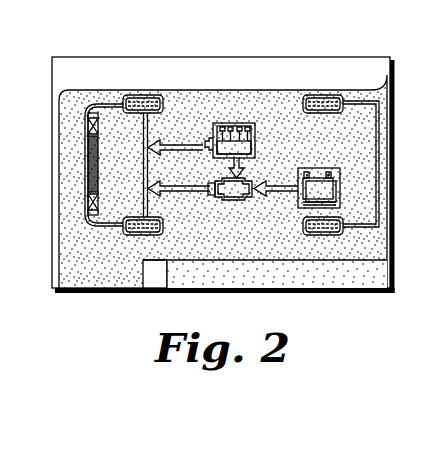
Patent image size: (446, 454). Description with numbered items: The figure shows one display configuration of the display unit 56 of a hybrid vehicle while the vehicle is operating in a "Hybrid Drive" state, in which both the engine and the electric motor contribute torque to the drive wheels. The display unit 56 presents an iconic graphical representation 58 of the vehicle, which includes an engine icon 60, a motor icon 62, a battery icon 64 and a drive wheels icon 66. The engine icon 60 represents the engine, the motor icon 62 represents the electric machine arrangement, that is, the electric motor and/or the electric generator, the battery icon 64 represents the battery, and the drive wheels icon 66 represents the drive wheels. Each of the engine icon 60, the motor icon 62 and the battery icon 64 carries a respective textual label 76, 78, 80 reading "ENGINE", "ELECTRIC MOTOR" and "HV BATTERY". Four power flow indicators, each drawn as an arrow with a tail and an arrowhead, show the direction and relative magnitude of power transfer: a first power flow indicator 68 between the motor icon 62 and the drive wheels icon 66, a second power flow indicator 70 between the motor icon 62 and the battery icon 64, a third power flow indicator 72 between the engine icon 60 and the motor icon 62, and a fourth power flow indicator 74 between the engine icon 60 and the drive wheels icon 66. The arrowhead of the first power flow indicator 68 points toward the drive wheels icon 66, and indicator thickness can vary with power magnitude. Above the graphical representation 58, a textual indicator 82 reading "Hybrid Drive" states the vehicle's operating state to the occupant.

The display unit 56 is at (357, 55).
The textual indicator 82 is at (95, 55).
The graphical representation 58 is at (80, 132).
The drive wheels icon 66 is at (136, 235).
The fourth power flow indicator 74 is at (196, 146).
The textual label 76 is at (207, 112).
The engine icon 60 is at (256, 146).
The third power flow indicator 72 is at (256, 157).
The textual label 80 is at (353, 164).
The battery icon 64 is at (340, 181).
The first power flow indicator 68 is at (182, 192).
The motor icon 62 is at (212, 198).
The textual label 78 is at (262, 223).
The second power flow indicator 70 is at (281, 192).